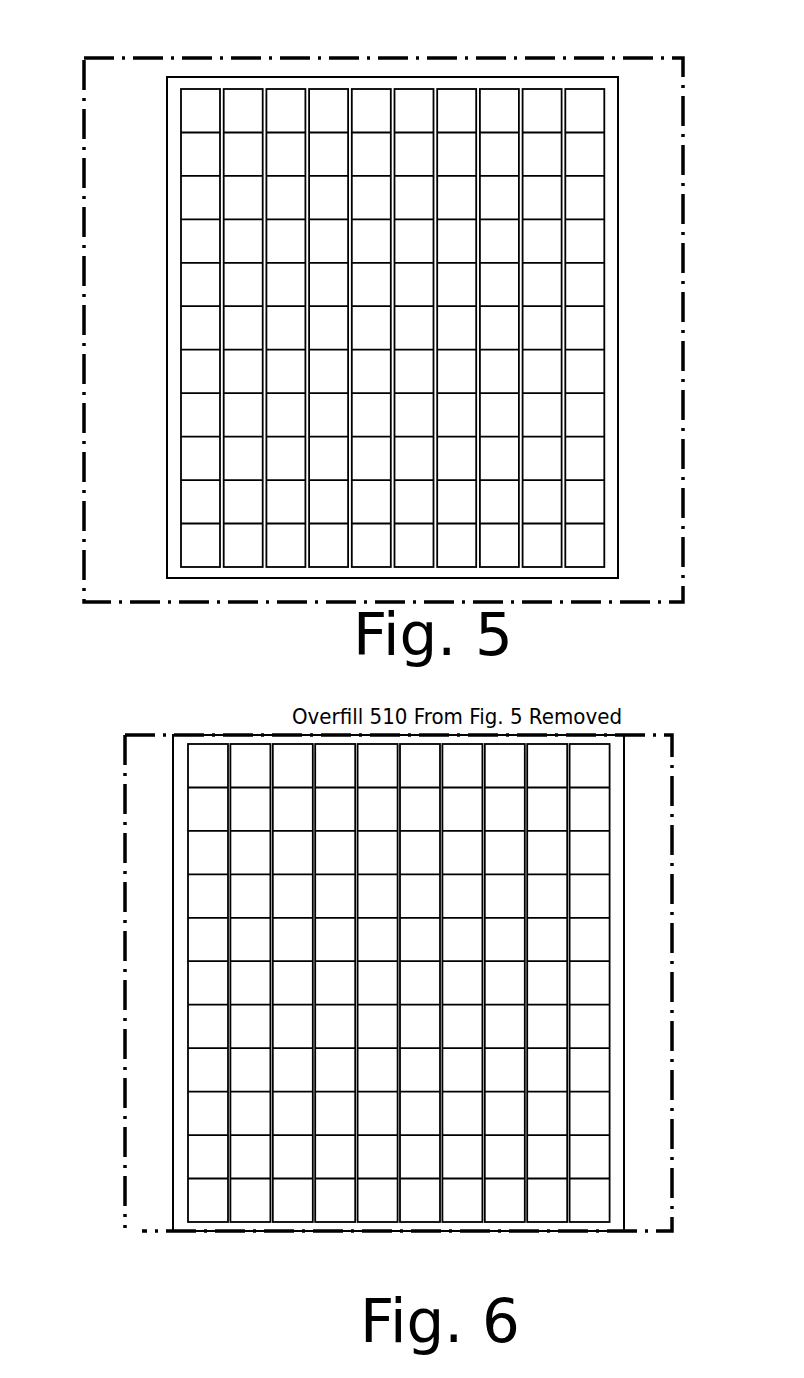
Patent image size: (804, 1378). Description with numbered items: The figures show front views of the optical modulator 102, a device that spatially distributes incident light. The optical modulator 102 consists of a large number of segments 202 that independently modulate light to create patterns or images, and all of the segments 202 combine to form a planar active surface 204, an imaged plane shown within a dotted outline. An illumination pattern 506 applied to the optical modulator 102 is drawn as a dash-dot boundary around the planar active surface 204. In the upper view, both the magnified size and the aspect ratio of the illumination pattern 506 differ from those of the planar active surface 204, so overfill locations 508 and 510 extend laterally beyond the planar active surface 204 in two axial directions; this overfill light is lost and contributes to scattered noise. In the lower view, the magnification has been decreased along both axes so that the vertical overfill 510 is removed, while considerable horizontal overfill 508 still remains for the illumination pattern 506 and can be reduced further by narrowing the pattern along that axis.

In FIG. 5, the optical modulator 102 is at (167, 540).
In FIG. 6, the optical modulator 102 is at (180, 1232).
In FIG. 5, the segments 202 is at (232, 322).
In FIG. 6, the segments 202 is at (290, 815).
In FIG. 5, the planar active surface 204 is at (387, 363).
In FIG. 6, the planar active surface 204 is at (420, 988).
In FIG. 5, the illumination pattern 506 is at (379, 330).
In FIG. 6, the illumination pattern 506 is at (412, 983).
In FIG. 5, the overfill location 508 is at (107, 463).
In FIG. 6, the overfill location 508 is at (150, 988).
In FIG. 5, the overfill location 510 is at (379, 335).